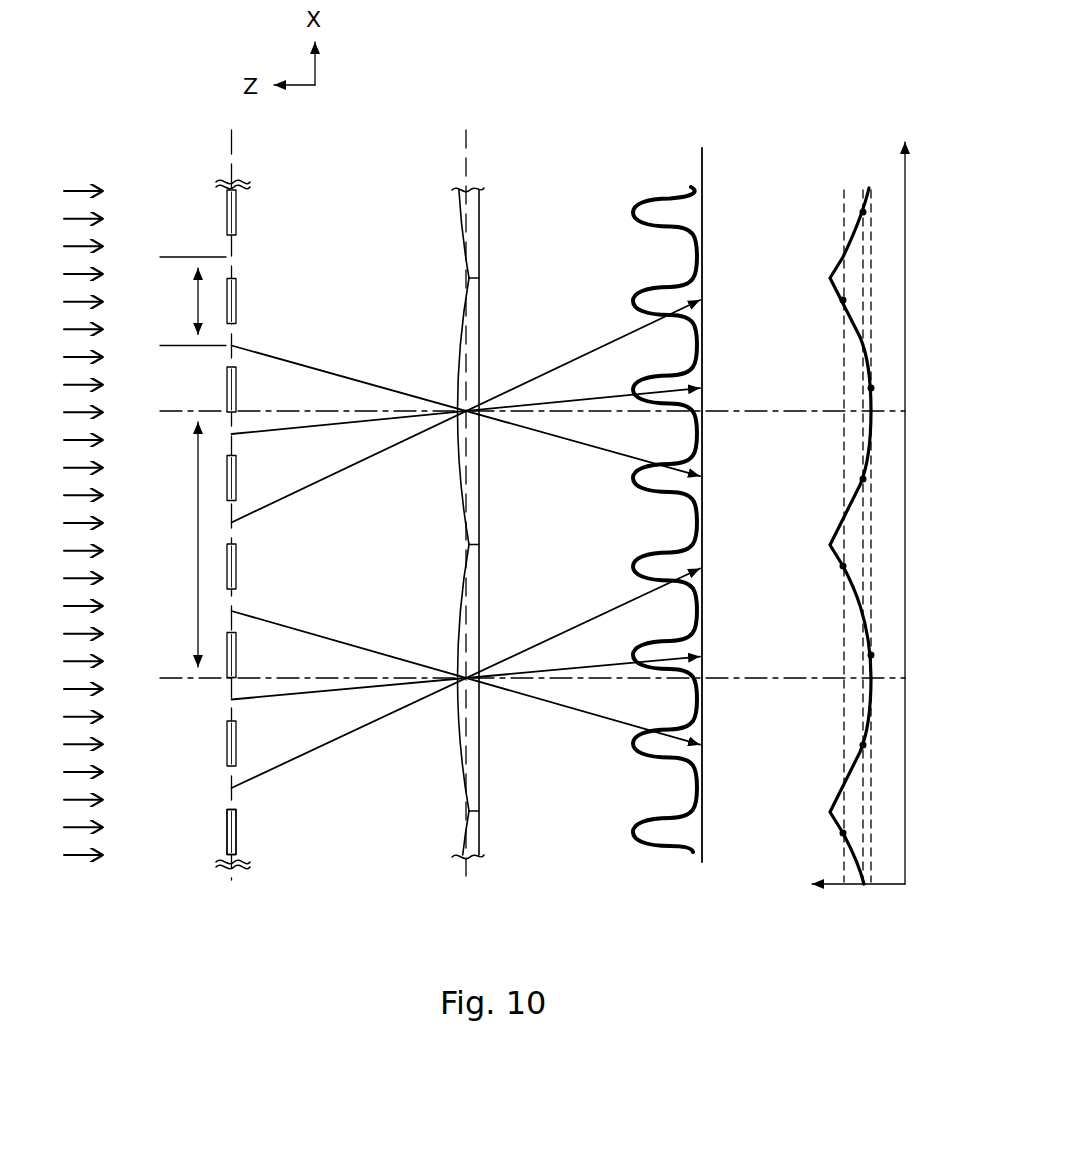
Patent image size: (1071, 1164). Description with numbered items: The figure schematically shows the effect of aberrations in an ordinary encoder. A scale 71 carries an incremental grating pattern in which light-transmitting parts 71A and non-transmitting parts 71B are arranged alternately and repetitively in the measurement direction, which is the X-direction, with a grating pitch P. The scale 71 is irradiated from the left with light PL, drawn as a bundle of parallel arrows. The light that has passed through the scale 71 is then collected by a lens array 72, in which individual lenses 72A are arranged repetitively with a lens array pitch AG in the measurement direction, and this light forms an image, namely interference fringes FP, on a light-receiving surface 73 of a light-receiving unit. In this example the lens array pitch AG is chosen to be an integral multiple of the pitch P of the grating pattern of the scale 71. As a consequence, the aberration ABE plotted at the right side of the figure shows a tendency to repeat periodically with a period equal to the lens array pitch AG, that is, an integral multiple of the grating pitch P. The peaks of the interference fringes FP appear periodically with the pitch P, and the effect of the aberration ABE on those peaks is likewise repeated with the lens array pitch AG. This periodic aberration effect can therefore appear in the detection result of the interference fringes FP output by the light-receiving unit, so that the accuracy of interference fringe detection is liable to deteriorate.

The scale 71 is at (214, 168).
The light-transmitting parts 71A is at (228, 786).
The non-transmitting parts 71B is at (226, 830).
The lens array 72 is at (446, 172).
The lenses 72A is at (466, 266).
The light-receiving surface 73 is at (704, 152).
The light PL is at (84, 170).
The interference fringes FP is at (634, 192).
The aberration ABE is at (866, 182).
The pitch of the grating pattern P is at (193, 301).
The lens array pitch AG is at (176, 544).